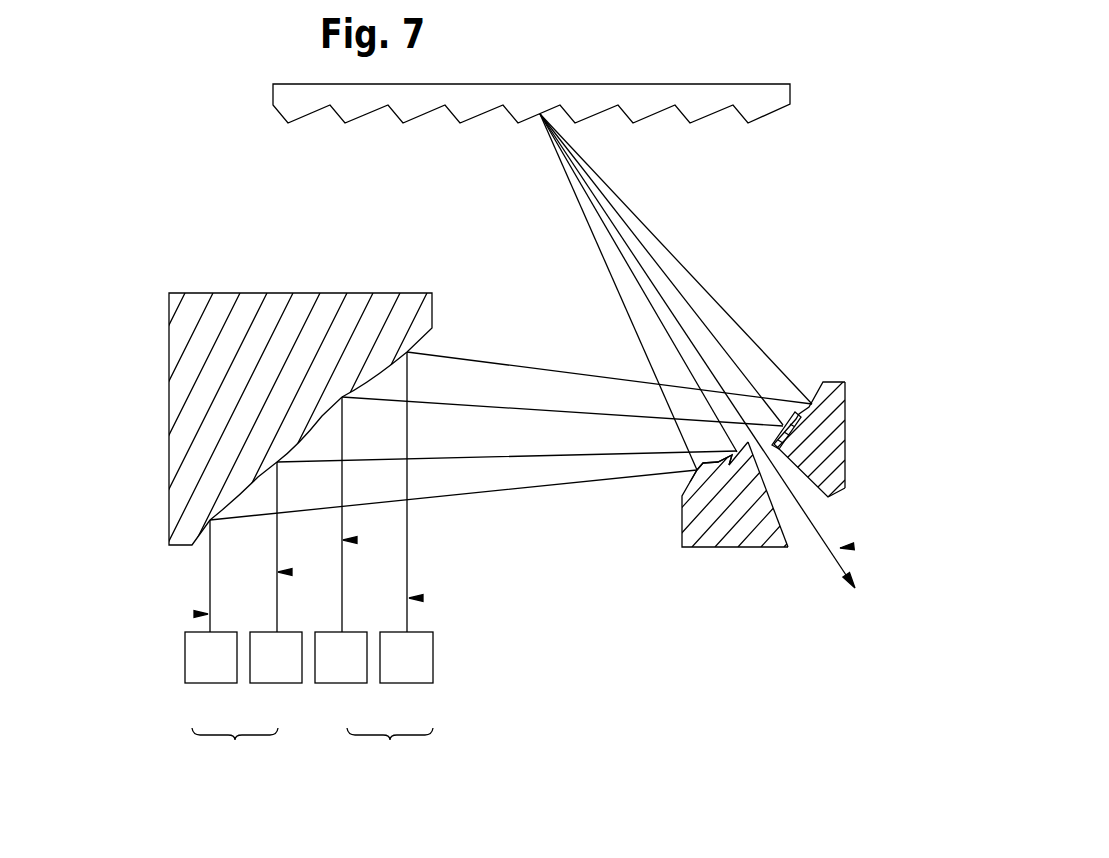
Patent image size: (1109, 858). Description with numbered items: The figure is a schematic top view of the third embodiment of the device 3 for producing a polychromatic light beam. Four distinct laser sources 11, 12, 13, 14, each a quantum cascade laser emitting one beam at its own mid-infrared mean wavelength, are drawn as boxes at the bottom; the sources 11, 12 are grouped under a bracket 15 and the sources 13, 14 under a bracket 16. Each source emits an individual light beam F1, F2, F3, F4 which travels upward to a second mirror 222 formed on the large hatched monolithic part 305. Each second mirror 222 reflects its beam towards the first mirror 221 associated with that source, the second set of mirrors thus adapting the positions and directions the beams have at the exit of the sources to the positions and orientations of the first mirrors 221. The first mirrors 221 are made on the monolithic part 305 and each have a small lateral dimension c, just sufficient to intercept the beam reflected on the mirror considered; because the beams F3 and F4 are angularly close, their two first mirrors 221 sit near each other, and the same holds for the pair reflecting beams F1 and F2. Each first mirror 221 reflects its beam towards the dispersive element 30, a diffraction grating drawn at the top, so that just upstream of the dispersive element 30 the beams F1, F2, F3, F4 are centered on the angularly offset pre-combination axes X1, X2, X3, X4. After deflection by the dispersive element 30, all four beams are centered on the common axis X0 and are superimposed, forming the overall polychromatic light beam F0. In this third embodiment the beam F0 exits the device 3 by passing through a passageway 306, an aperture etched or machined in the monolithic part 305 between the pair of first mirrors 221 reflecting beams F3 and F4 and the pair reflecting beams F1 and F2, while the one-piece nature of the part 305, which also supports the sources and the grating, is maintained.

The device for producing a polychromatic light beam 3 is at (208, 181).
The dispersive element 30 is at (697, 103).
The monolithic part 305 is at (193, 423).
The passageway 306 is at (797, 522).
The lateral dimension c is at (848, 404).
The second mirror 222 is at (424, 335).
The first mirror 221 is at (683, 487).
The common axis of propagation X0 is at (820, 525).
The pre-combination axis of propagation X1 is at (622, 201).
The pre-combination axis of propagation X2 is at (663, 275).
The pre-combination axis of propagation X3 is at (627, 274).
The pre-combination axis of propagation X4 is at (583, 223).
The polychromatic light beam F0 is at (852, 547).
The light beam F1 is at (421, 598).
The light beam F2 is at (355, 540).
The light beam F3 is at (290, 572).
The light beam F4 is at (196, 614).
The laser source 11 is at (408, 655).
The laser source 12 is at (338, 655).
The laser source 13 is at (270, 660).
The laser source 14 is at (210, 653).
The detector group 15 is at (390, 746).
The detector group 16 is at (235, 746).